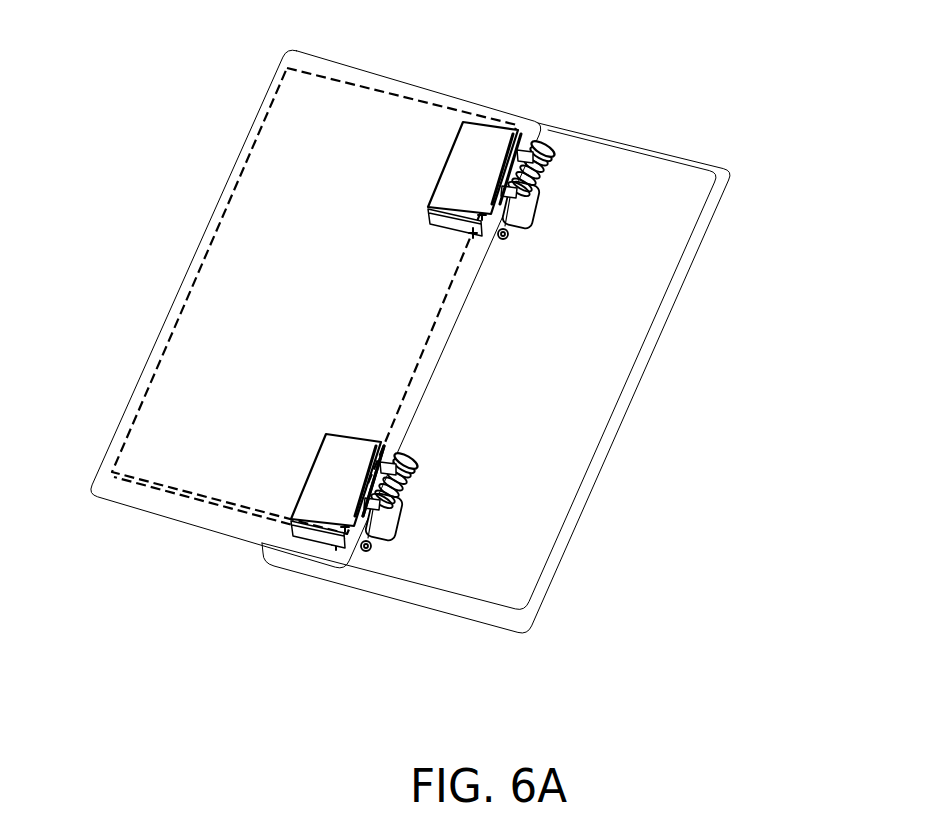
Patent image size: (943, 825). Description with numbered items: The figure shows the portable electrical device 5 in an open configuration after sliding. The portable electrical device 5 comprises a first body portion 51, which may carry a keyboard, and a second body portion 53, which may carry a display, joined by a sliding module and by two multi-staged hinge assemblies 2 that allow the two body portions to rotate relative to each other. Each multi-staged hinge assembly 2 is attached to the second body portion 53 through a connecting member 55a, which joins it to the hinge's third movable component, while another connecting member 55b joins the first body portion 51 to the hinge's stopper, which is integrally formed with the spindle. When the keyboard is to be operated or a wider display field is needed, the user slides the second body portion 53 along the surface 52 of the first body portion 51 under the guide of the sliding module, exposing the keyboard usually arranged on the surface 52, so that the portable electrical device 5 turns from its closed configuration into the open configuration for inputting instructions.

The portable electrical device 5 is at (222, 120).
The multi-staged hinge assembly 2 is at (545, 126).
The first body portion 51 is at (543, 600).
The surface 52 is at (672, 195).
The second body portion 53 is at (128, 508).
The connecting member 55a is at (305, 492).
The connecting member 55b is at (323, 543).